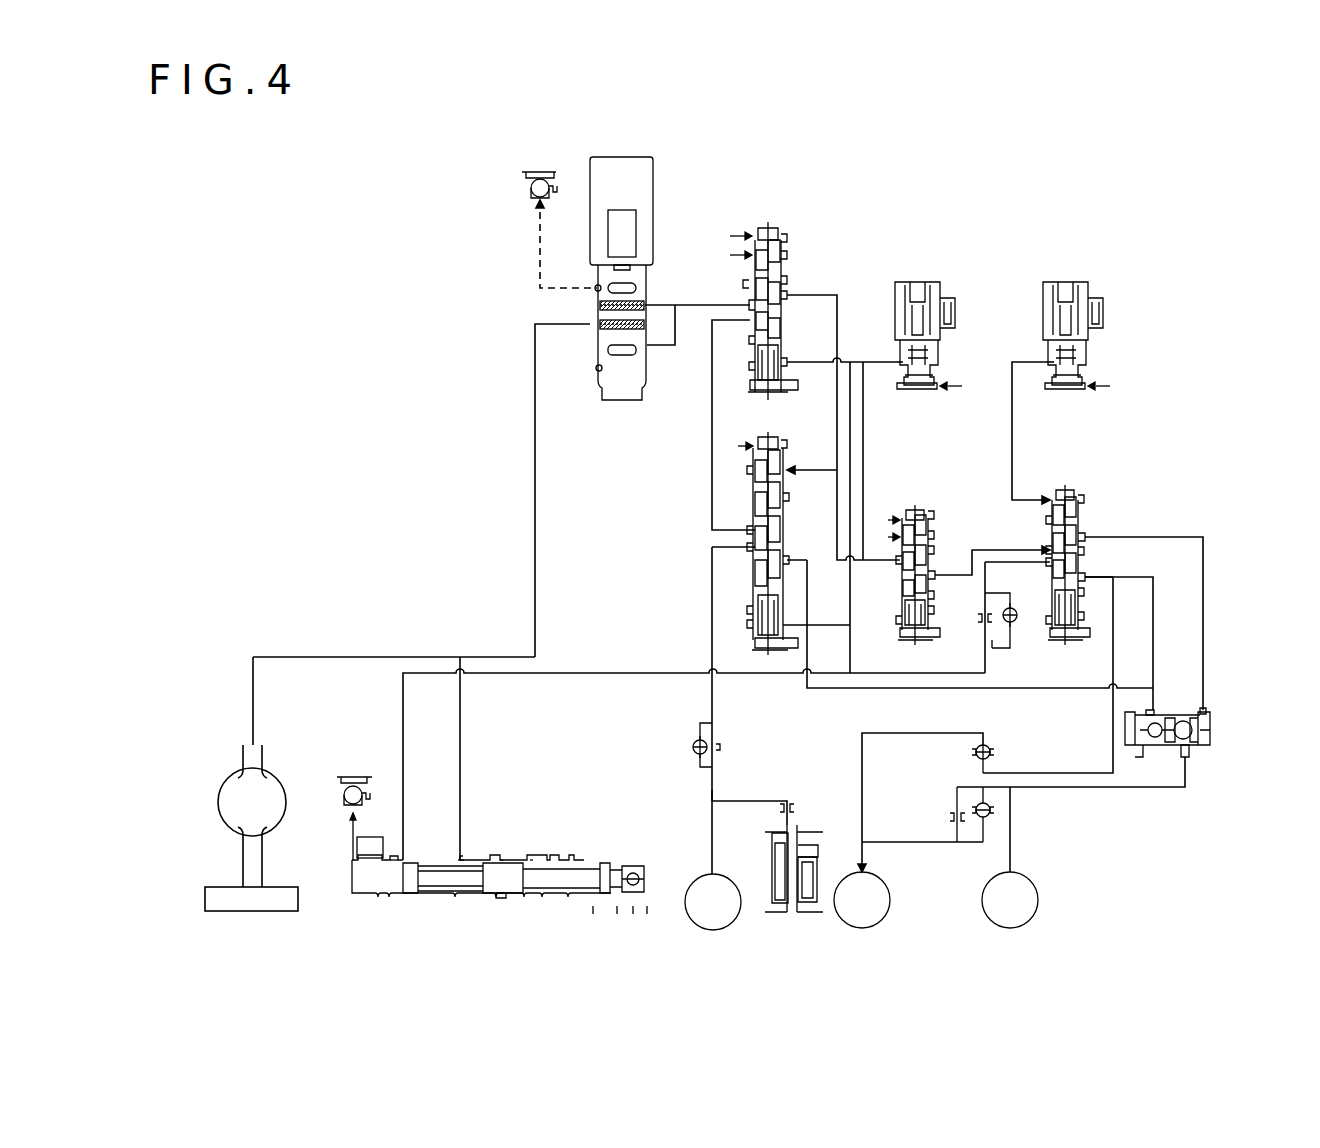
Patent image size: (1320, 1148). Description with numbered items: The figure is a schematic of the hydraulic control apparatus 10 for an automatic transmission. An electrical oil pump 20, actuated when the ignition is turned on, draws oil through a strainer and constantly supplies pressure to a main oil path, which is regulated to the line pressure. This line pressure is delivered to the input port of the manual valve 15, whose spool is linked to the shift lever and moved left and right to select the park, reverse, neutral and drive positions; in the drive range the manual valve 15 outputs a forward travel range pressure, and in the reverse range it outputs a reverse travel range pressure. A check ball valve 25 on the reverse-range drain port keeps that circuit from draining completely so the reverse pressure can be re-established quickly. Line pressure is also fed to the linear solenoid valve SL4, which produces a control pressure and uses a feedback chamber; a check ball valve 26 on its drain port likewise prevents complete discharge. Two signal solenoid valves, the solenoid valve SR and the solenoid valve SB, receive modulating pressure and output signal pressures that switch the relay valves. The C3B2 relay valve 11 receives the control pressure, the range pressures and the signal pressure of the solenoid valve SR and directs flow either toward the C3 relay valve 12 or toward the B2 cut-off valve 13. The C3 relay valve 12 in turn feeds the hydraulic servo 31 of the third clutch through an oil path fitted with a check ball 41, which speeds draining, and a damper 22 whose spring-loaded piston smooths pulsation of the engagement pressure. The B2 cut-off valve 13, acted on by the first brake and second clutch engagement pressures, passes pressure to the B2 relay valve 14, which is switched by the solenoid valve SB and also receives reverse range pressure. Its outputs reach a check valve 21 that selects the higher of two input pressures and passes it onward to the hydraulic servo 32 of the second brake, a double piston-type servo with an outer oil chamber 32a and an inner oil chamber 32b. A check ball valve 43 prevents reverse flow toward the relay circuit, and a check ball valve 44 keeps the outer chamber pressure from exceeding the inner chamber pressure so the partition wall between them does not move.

The hydraulic control apparatus 10 is at (732, 121).
The C3B2 relay valve 11 is at (784, 222).
The C3 relay valve 12 is at (782, 438).
The B2 cut-off valve 13 is at (916, 498).
The B2 relay valve 14 is at (1067, 486).
The manual valve 15 is at (496, 908).
The electrical oil pump 20 is at (212, 826).
The check valve 21 is at (1212, 732).
The damper 22 is at (806, 798).
The check ball valve 25 is at (343, 770).
The check ball valve 26 is at (506, 181).
The hydraulic servo of the third clutch C-3 31 is at (730, 880).
The hydraulic servo of the second brake B-2 32 is at (895, 910).
The B-2 outer oil chamber 32a is at (890, 888).
The B-2 inner oil chamber 32b is at (982, 888).
The check ball 41 is at (680, 749).
The check ball valve 43 is at (998, 752).
The check ball valve 44 is at (994, 826).
The linear solenoid valve SL4 is at (632, 150).
The solenoid valve SR is at (925, 272).
The solenoid valve SB is at (1074, 272).